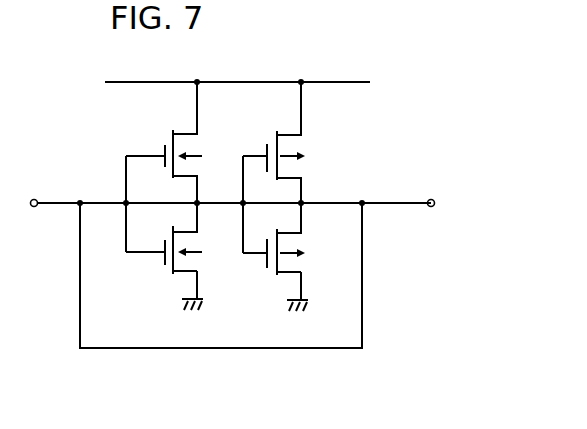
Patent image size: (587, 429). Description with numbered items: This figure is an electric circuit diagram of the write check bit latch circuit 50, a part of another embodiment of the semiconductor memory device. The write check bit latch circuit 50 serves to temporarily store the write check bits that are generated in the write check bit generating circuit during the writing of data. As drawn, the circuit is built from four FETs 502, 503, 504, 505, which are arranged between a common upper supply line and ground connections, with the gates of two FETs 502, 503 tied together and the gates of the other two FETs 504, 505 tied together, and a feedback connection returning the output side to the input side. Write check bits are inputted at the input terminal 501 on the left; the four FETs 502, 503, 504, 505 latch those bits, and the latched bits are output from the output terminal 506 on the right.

The write check bit latch circuit 50 is at (447, 73).
The input terminal 501 is at (38, 200).
The FET 502 is at (163, 150).
The FET 503 is at (164, 261).
The FET 504 is at (265, 151).
The FET 505 is at (265, 261).
The output terminal 506 is at (436, 203).